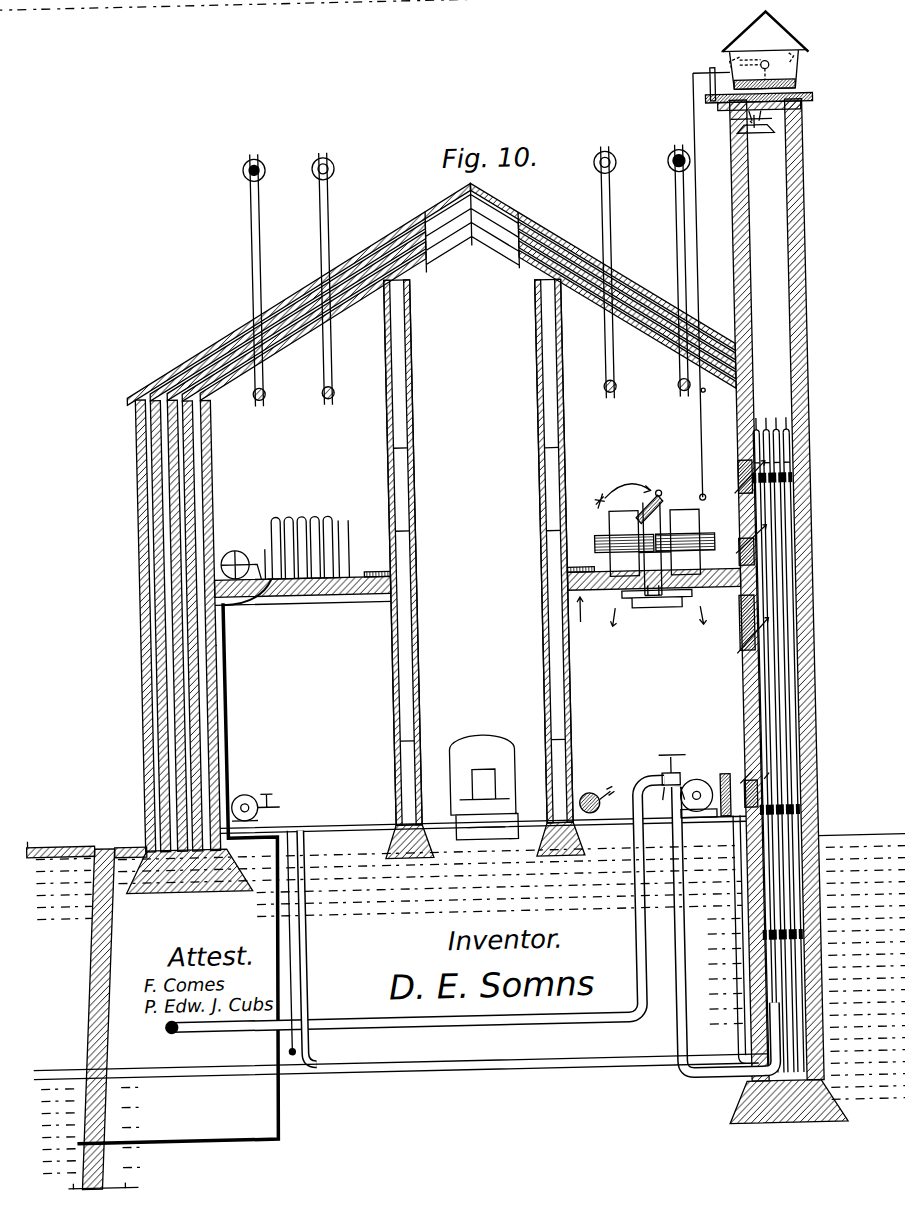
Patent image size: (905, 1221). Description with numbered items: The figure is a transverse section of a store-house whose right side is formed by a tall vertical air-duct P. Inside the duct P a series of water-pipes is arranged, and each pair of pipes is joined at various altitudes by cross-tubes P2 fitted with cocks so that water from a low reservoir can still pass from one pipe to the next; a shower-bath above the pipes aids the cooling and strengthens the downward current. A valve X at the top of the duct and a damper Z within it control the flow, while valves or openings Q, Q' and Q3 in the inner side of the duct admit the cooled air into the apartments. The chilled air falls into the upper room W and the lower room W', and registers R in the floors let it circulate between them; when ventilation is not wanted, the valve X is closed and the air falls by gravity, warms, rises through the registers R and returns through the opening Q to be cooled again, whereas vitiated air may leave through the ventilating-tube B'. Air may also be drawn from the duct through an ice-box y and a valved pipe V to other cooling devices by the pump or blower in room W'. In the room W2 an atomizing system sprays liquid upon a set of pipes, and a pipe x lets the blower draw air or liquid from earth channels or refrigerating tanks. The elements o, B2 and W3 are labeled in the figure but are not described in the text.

The air-duct P is at (776, 607).
The cross-tubes P2 is at (813, 458).
The valve X is at (765, 50).
The damper Z is at (711, 396).
The operating rod o is at (715, 286).
The ventilating-tube B' is at (609, 280).
The hanging rod B2 is at (681, 279).
The room W is at (653, 519).
The lower room W' is at (642, 629).
The room W2 is at (284, 522).
The lower left room W3 is at (304, 655).
The registers R is at (477, 572).
The valves Q is at (742, 627).
The valve Q' is at (739, 545).
The valve Q3 is at (746, 634).
The pipe x is at (175, 861).
The ice-box y is at (666, 547).
The pipe V is at (597, 795).